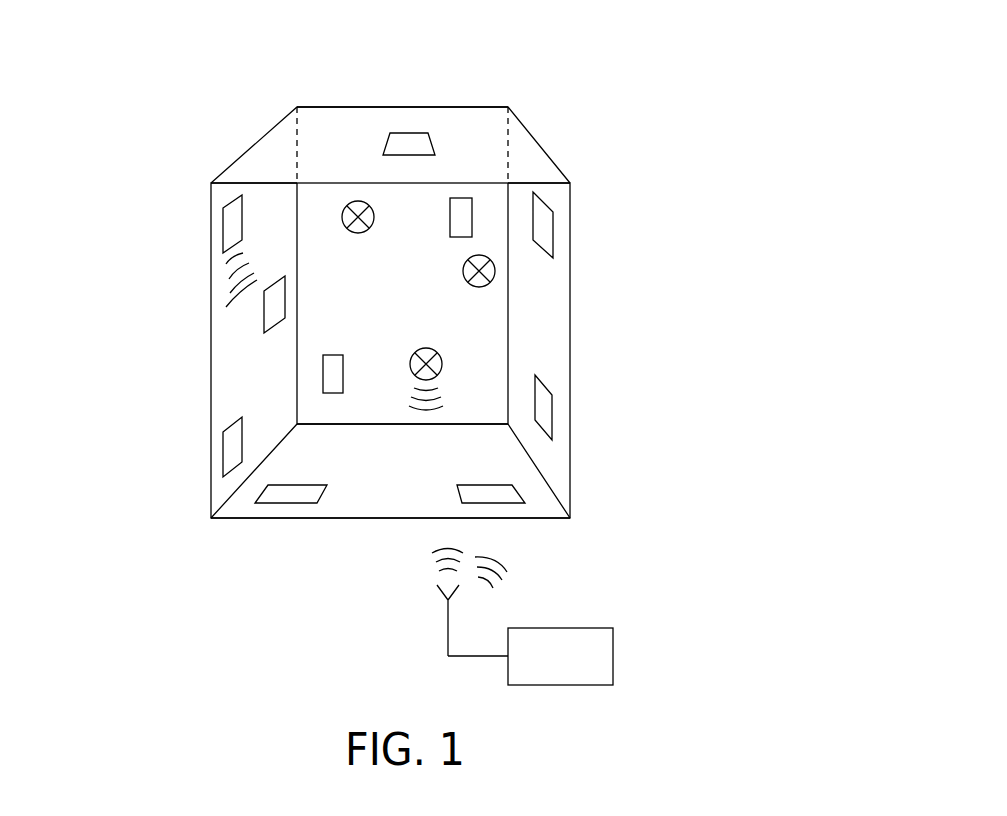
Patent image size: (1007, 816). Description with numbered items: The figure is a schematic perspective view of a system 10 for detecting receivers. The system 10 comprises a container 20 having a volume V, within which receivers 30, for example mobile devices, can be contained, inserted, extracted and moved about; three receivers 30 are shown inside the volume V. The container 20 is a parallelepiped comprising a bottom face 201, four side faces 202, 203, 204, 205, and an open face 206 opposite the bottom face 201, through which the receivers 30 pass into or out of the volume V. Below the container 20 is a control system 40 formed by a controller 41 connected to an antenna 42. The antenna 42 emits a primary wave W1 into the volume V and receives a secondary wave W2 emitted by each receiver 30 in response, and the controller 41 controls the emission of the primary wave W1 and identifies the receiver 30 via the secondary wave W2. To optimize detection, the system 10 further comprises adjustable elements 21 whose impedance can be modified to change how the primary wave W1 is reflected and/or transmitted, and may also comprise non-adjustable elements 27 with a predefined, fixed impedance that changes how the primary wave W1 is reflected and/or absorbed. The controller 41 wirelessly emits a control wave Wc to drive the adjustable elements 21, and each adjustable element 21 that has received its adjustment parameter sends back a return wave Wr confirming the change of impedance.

The system 10 is at (678, 158).
The container 20 is at (545, 150).
The bottom face 201 is at (493, 307).
The side face 202 is at (570, 340).
The side face 203 is at (348, 519).
The side face 204 is at (211, 483).
The side face 205 is at (485, 124).
The open face 206 is at (500, 453).
The adjustable element 21 is at (553, 237).
The non-adjustable element 27 is at (409, 142).
The receiver 30 is at (410, 358).
The control system 40 is at (337, 650).
The controller 41 is at (558, 685).
The antenna 42 is at (468, 657).
The volume V is at (479, 222).
The primary wave W1 is at (432, 567).
The secondary wave W2 is at (452, 390).
The control wave Wc is at (500, 580).
The return wave Wr is at (230, 290).